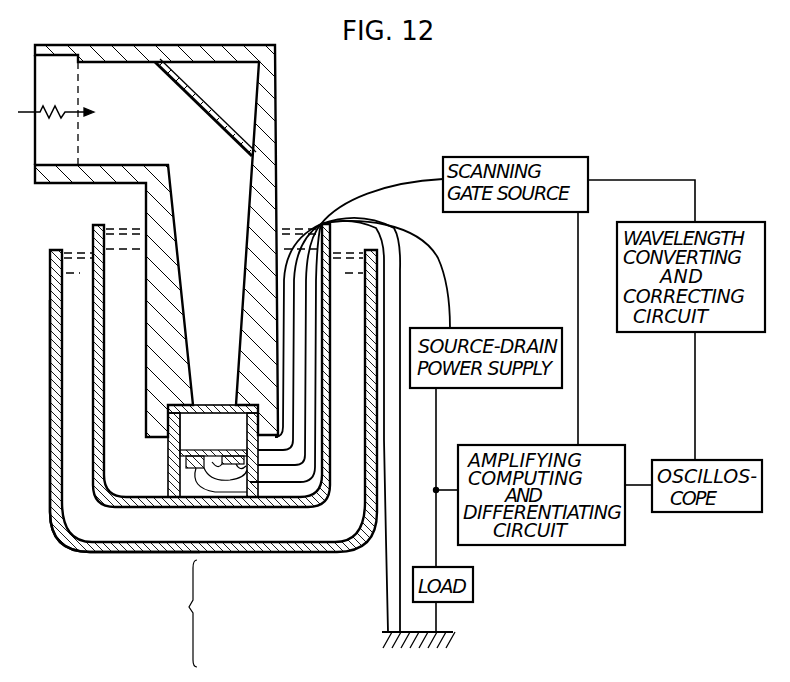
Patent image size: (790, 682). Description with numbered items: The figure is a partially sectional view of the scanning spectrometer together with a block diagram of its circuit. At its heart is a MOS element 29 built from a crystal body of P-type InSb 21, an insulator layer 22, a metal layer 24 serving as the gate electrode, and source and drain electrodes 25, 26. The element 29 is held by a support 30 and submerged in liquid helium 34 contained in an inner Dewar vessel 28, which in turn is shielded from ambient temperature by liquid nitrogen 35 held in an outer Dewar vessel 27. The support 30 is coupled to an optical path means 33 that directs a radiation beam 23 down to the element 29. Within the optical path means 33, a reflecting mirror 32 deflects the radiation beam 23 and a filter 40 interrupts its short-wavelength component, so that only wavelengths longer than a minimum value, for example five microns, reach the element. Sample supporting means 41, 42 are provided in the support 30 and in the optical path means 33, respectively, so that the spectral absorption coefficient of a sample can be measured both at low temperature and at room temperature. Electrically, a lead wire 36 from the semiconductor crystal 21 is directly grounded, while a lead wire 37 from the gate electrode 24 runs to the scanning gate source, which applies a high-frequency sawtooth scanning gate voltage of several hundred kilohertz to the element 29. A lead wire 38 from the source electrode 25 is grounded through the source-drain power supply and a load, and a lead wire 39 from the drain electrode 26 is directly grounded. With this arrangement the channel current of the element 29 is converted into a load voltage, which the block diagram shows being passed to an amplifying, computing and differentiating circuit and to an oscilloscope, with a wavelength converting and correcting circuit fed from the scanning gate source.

The crystal body of P-type InSb 21 is at (208, 519).
The insulator layer 22 is at (224, 530).
The radiation beam 23 is at (57, 106).
The metal layer 24 is at (225, 546).
The source electrode 25 is at (221, 557).
The drain electrode 26 is at (225, 564).
The Dewar vessel 27 is at (73, 442).
The Dewar vessel 28 is at (97, 484).
The MOS element 29 is at (189, 607).
The support 30 is at (164, 466).
The reflecting mirror 32 is at (194, 116).
The optical path means 33 is at (98, 184).
The liquid helium 34 is at (134, 427).
The liquid nitrogen 35 is at (92, 381).
The lead wire 36 is at (328, 338).
The lead wire 37 is at (334, 390).
The lead wire 38 is at (322, 448).
The lead wire 39 is at (334, 478).
The filter 40 is at (205, 404).
The sample supporting means 41 is at (182, 419).
The sample supporting means 42 is at (60, 166).